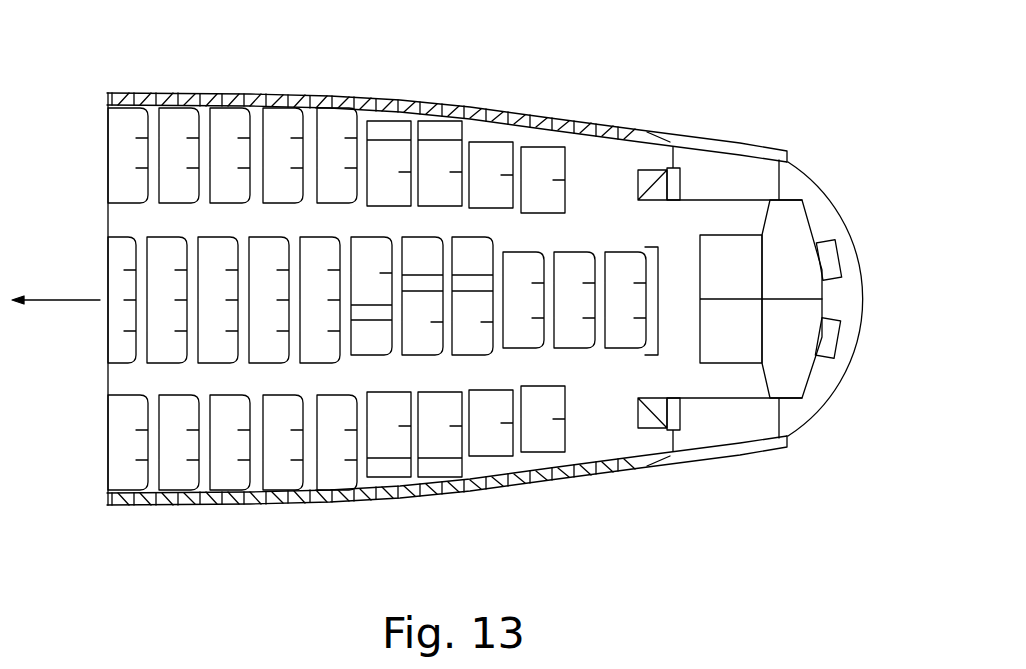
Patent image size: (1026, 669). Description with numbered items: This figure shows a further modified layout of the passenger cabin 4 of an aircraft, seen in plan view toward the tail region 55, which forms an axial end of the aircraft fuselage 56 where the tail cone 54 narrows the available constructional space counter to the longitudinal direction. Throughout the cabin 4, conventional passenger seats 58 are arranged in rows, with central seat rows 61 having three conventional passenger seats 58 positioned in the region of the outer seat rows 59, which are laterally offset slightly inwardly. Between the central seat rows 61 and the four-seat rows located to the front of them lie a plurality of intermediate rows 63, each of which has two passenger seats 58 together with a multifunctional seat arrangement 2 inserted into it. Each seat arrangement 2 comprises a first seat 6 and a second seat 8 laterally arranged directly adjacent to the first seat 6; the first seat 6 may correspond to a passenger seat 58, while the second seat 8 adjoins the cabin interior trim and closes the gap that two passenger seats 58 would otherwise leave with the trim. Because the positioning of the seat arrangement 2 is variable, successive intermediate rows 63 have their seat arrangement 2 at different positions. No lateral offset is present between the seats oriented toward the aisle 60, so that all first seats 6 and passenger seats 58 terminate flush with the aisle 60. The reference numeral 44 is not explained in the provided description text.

The multifunctional seat arrangement 2 is at (444, 313).
The passenger cabin 4 is at (667, 147).
The first seat 6 is at (373, 158).
The second seat 8 is at (411, 253).
The aircraft cabin 44 is at (117, 213).
The tail cone 54 is at (612, 128).
The tail region 55 is at (863, 238).
The aircraft fuselage 56 is at (800, 166).
The passenger seat 58 is at (172, 112).
The outer seat row 59 is at (587, 176).
The aisle 60 is at (265, 232).
The central seat row 61 is at (620, 328).
The intermediate row 63 is at (347, 272).